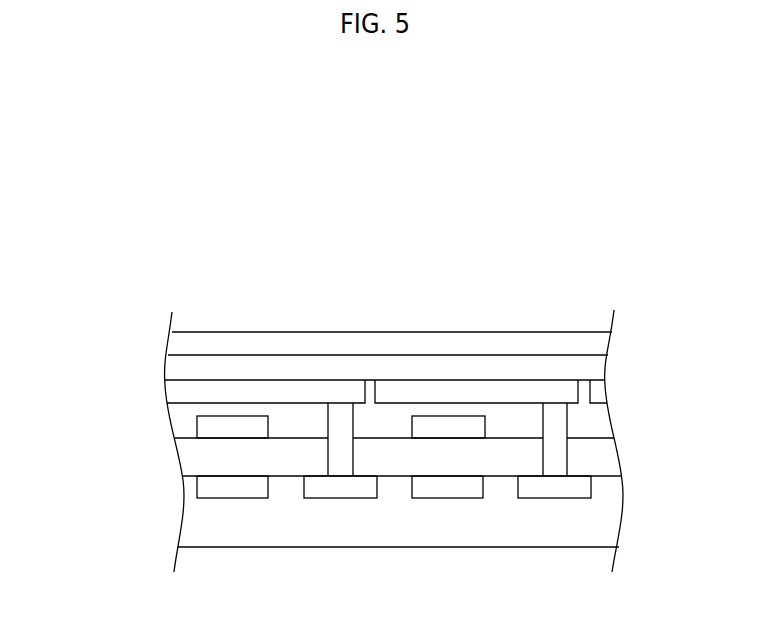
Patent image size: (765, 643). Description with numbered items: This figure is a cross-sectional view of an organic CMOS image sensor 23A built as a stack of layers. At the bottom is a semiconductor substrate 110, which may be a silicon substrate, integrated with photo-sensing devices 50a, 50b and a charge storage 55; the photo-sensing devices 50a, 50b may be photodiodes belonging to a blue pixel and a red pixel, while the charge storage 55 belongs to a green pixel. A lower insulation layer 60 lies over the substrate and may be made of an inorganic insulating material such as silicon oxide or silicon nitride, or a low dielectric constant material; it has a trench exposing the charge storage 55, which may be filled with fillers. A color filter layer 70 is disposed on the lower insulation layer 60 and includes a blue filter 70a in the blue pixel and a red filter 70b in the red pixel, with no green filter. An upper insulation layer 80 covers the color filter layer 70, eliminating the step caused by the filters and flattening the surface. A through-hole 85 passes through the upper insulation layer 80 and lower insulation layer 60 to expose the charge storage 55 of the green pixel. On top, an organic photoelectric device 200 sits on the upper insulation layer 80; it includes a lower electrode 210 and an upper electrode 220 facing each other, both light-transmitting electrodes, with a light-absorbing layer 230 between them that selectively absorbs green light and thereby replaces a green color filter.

The organic CMOS image sensor 23A is at (592, 257).
The organic photoelectric device 200 is at (112, 324).
The upper electrode 220 is at (168, 346).
The light-absorbing layer 230 is at (168, 370).
The lower electrode 210 is at (168, 393).
The upper insulation layer 80 is at (598, 421).
The color filter layer 70 is at (458, 283).
The blue filter 70a is at (236, 425).
The red filter 70b is at (447, 425).
The through-hole 85 is at (543, 423).
The lower insulation layer 60 is at (598, 457).
The semiconductor substrate 110 is at (598, 513).
The photo-sensing device 50a is at (230, 487).
The photo-sensing device 50b is at (442, 487).
The charge storage 55 is at (337, 487).